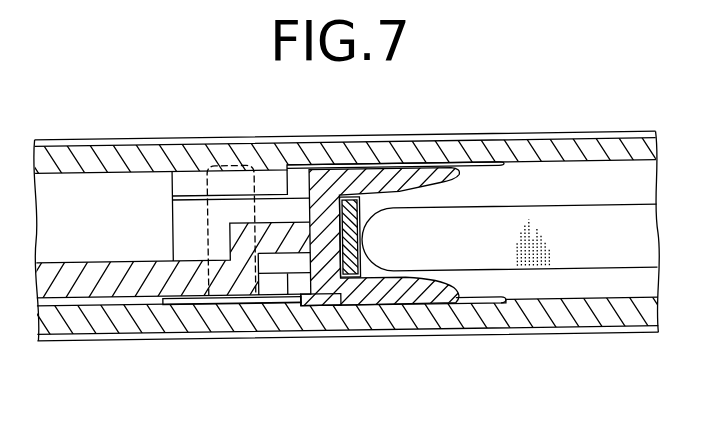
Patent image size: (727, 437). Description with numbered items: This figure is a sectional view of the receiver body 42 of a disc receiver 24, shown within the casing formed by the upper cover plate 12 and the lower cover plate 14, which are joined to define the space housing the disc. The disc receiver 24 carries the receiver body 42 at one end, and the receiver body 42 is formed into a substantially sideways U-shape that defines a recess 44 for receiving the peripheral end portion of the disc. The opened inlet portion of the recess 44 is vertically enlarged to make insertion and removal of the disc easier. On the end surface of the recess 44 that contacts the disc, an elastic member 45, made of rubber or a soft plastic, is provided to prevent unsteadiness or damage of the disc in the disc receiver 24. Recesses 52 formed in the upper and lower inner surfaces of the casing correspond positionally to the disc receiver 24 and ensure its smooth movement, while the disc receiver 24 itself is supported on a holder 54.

The upper cover plate 12 is at (181, 148).
The lower cover plate 14 is at (139, 334).
The disc receiver 24 is at (334, 170).
The receiver body 42 is at (333, 299).
The recess 44 is at (420, 225).
The elastic member 45 is at (352, 199).
The recess 52 is at (488, 170).
The holder 54 is at (193, 303).